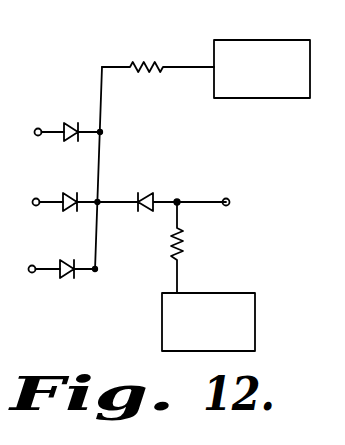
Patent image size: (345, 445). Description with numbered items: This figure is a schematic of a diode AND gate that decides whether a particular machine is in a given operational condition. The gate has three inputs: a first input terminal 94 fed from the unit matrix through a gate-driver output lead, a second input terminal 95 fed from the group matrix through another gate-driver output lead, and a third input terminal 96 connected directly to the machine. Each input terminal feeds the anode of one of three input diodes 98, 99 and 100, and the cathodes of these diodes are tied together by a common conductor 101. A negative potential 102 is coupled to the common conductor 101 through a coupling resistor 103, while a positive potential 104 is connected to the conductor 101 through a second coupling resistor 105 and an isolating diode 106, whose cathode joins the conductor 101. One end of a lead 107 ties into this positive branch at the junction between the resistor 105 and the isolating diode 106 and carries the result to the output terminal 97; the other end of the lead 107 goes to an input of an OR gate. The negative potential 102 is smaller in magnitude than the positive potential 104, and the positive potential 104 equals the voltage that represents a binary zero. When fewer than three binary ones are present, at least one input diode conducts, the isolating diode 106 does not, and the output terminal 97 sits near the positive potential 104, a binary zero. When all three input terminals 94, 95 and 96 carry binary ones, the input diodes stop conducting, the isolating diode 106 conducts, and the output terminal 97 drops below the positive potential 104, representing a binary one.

The first input terminal 94 is at (34, 206).
The second input terminal 95 is at (31, 273).
The third input terminal 96 is at (34, 131).
The output terminal 97 is at (226, 206).
The input diode 98 is at (74, 123).
The input diode 99 is at (65, 192).
The input diode 100 is at (64, 259).
The common conductor 101 is at (101, 224).
The negative potential 102 is at (270, 40).
The coupling resistor 103 is at (134, 62).
The positive potential 104 is at (256, 321).
The coupling resistor 105 is at (183, 236).
The isolating diode 106 is at (143, 193).
The lead 107 is at (179, 200).